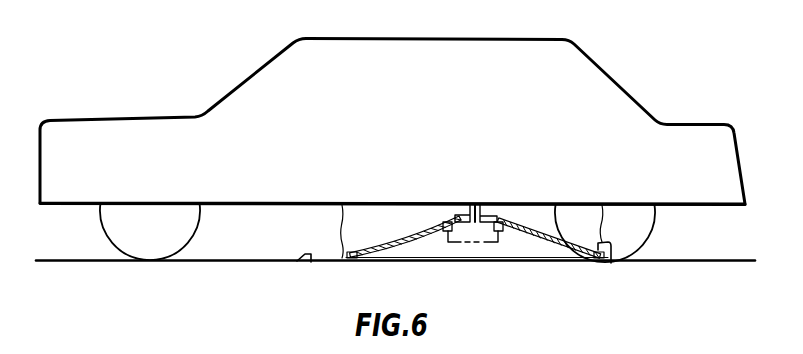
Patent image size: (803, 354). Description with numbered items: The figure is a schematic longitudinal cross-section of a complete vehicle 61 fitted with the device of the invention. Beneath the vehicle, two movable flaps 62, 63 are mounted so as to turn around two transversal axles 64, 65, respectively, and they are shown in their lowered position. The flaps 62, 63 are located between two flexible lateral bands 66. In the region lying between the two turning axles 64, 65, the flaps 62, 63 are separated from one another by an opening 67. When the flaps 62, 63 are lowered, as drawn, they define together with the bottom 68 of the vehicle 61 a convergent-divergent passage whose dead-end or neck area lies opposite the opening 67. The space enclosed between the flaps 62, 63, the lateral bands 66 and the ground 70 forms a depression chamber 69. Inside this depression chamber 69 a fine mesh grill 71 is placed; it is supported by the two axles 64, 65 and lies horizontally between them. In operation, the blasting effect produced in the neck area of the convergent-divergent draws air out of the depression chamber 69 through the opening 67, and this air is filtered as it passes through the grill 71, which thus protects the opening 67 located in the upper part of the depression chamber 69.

The vehicle 61 is at (160, 135).
The flap 62 is at (388, 259).
The flap 63 is at (546, 249).
The transversal axle 64 is at (446, 230).
The transversal axle 65 is at (501, 229).
The flexible lateral band 66 is at (611, 263).
The opening 67 is at (466, 205).
The bottom 68 is at (305, 203).
The depression chamber 69 is at (462, 247).
The ground 70 is at (312, 262).
The fine mesh grill 71 is at (494, 215).